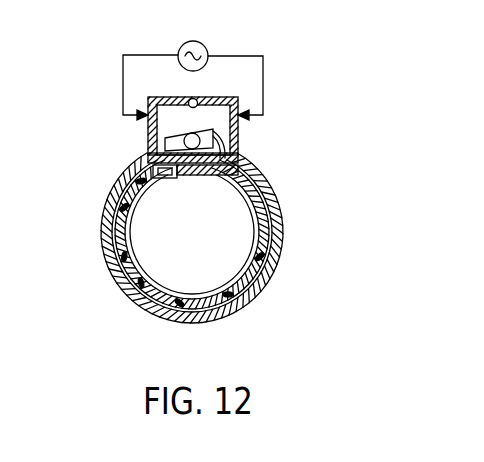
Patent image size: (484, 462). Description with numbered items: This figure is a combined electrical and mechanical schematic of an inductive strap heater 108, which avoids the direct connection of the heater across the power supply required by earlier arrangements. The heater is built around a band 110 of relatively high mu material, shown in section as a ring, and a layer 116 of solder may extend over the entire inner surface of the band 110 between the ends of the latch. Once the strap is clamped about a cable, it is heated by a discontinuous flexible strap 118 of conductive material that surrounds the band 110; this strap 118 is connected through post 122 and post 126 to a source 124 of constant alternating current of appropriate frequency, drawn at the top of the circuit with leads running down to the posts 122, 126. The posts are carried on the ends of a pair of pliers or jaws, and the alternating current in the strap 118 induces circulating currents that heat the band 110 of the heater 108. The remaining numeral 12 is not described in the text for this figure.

The tubular member 12 is at (270, 230).
The inductive strap heater 108 is at (137, 253).
The band 110 is at (208, 295).
The layer of solder 116 is at (167, 291).
The discontinuous flexible strap 118 is at (263, 180).
The post 122 is at (147, 133).
The source of constant alternating current 124 is at (203, 42).
The post 126 is at (241, 142).